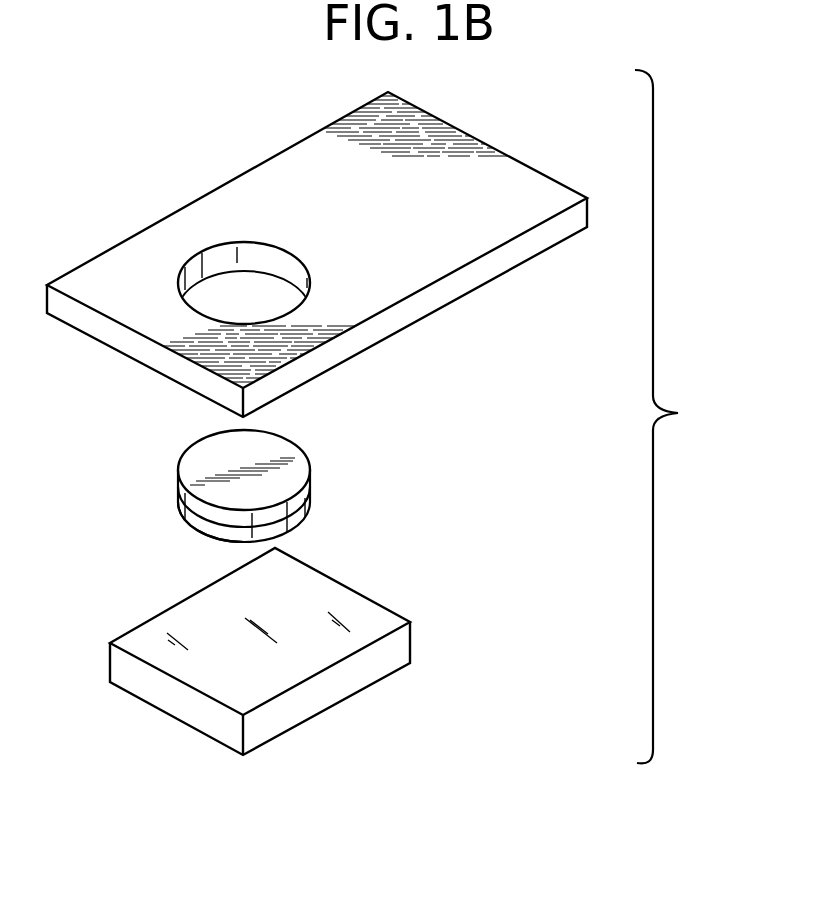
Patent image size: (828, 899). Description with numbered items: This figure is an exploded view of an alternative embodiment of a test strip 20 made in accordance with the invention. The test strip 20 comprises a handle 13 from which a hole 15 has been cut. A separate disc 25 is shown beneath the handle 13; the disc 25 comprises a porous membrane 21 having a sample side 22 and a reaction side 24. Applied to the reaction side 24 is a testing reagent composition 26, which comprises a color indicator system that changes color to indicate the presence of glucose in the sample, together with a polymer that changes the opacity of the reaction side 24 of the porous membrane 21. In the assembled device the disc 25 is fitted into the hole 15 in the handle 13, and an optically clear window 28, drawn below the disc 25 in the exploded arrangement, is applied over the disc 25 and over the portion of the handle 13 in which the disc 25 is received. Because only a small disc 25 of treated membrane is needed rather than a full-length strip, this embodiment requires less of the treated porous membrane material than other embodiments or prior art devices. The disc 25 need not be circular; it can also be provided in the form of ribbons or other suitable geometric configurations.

The handle 13 is at (538, 192).
The hole 15 is at (257, 287).
The test strip 20 is at (673, 416).
The porous membrane 21 is at (311, 483).
The sample side 22 is at (270, 442).
The reaction side 24 is at (311, 508).
The disc 25 is at (256, 487).
The testing reagent composition 26 is at (192, 525).
The optically clear window 28 is at (393, 657).